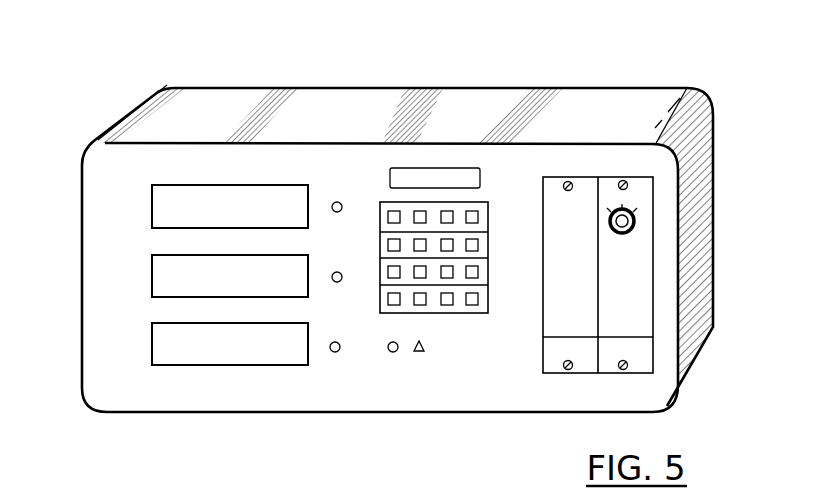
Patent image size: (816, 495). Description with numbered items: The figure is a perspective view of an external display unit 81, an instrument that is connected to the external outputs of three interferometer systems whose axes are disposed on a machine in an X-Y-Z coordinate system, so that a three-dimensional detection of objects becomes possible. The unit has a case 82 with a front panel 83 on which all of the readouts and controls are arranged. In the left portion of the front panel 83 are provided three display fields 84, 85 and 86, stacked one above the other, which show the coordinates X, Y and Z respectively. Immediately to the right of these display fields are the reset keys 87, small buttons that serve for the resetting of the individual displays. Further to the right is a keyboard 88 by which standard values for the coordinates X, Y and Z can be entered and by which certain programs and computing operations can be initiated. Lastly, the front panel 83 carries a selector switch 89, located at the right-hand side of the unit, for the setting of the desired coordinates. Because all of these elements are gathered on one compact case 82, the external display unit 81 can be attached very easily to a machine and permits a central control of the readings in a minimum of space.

The external display unit 81 is at (497, 75).
The case 82 is at (317, 110).
The front panel 83 is at (378, 395).
The display field 84 is at (168, 193).
The display field 85 is at (165, 265).
The display field 86 is at (172, 352).
The reset keys 87 is at (340, 203).
The keyboard 88 is at (456, 322).
The selector switch 89 is at (642, 222).